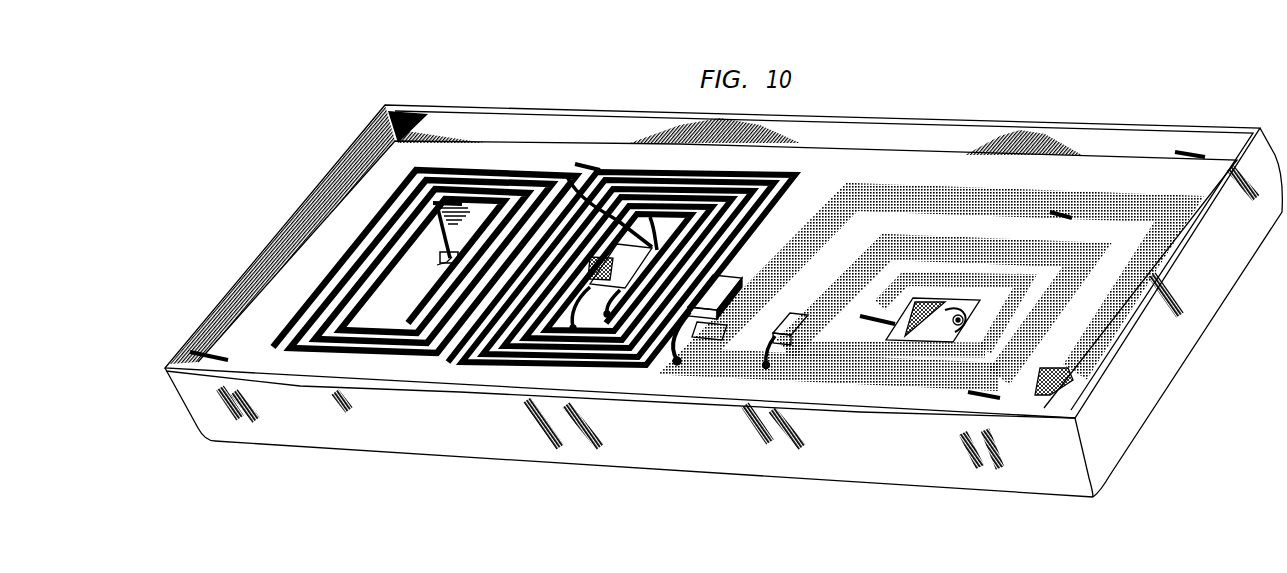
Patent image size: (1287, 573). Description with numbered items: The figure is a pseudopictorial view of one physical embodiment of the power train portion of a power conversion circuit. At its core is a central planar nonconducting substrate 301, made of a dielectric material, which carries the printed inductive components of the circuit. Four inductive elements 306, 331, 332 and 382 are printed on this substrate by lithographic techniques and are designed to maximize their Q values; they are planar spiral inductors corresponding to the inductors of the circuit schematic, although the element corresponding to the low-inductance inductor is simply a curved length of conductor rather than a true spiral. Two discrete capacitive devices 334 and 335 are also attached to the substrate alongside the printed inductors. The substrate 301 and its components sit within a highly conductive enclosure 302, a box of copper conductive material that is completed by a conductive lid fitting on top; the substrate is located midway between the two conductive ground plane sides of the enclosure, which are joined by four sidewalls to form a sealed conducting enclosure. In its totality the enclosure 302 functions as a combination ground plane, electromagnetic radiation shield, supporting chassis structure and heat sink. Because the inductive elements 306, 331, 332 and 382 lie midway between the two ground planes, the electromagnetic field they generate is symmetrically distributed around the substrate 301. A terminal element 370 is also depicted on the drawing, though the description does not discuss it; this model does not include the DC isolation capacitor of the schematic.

The nonconducting substrate 301 is at (848, 158).
The highly conductive enclosure 302 is at (805, 463).
The planar spiral inductor 306 is at (514, 188).
The planar spiral inductor 331 is at (727, 190).
The planar spiral inductor 332 is at (1066, 202).
The capacitive device 334 is at (738, 276).
The capacitive device 335 is at (795, 313).
The output terminal 370 is at (1047, 397).
The planar spiral inductor 382 is at (973, 273).